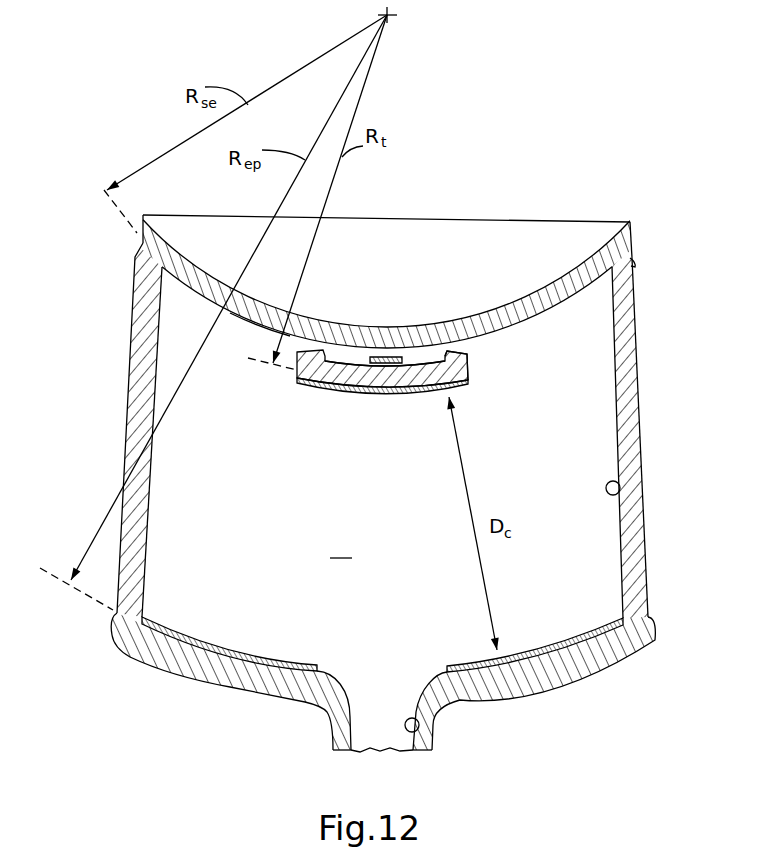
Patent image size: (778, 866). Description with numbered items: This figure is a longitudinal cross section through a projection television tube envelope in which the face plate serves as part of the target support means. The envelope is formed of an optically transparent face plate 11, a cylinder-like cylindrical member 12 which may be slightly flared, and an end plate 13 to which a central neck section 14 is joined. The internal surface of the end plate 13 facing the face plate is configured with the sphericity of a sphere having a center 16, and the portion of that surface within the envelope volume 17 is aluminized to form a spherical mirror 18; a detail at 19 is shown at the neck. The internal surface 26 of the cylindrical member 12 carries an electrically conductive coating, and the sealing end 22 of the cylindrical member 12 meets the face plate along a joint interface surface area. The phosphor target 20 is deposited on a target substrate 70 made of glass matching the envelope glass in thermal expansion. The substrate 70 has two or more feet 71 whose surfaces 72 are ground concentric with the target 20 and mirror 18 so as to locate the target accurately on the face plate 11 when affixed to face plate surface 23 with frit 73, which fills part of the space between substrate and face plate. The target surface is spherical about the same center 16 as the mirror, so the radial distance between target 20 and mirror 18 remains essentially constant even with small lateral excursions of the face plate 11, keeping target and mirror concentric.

The face plate 11 is at (563, 272).
The cylindrical member 12 is at (632, 400).
The end plate 13 is at (657, 632).
The neck section 14 is at (332, 737).
The center 16 is at (392, 18).
The envelope volume 17 is at (342, 546).
The mirror 18 is at (210, 642).
The neck detail 19 is at (419, 729).
The phosphor target 20 is at (424, 313).
The sealing end 22 is at (636, 264).
The face plate surface 23 is at (247, 317).
The internal surface 26 is at (620, 490).
The target substrate 70 is at (348, 395).
The feet 71 is at (458, 358).
The surfaces 72 is at (450, 347).
The frit 73 is at (382, 352).